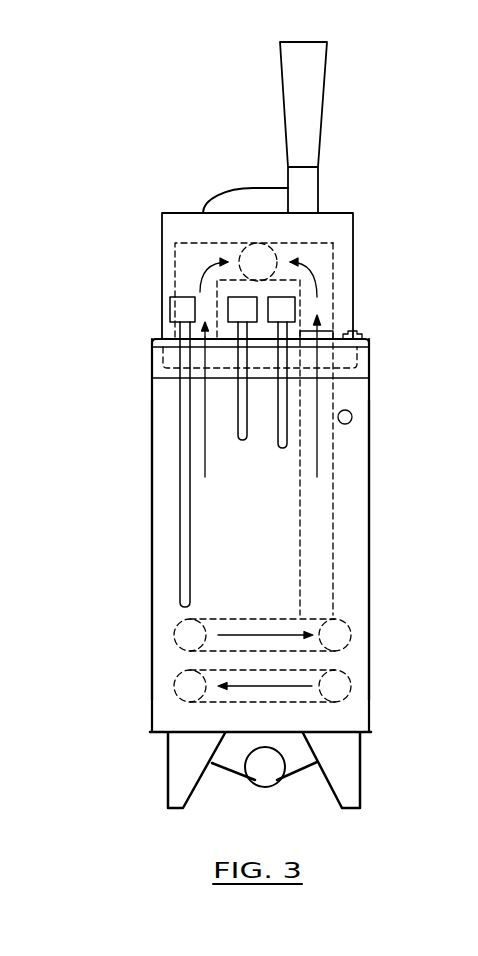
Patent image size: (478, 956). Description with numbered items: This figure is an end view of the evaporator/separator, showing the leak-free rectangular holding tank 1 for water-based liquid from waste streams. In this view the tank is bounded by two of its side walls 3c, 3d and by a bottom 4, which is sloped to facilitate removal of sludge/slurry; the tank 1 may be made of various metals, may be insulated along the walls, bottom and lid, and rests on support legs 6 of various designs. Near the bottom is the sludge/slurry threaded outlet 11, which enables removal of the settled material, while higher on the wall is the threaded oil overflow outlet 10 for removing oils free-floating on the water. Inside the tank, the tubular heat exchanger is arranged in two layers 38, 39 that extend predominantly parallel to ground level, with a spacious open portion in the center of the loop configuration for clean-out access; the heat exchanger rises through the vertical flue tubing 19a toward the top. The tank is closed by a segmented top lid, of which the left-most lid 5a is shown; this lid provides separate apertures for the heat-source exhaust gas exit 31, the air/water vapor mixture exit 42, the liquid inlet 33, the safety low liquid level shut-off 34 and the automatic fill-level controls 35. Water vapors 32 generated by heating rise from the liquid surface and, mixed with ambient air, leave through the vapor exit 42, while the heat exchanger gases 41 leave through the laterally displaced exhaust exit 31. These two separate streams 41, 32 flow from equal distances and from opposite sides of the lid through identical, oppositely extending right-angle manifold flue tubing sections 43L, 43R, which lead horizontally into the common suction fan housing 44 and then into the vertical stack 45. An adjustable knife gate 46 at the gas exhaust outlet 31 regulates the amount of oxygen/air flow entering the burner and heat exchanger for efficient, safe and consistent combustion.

The holding tank 1 is at (143, 448).
The wall 3c is at (133, 550).
The wall 3d is at (394, 550).
The bottom 4 is at (300, 743).
The left-most lid 5a is at (151, 338).
The support legs 6 is at (178, 812).
The threaded oil overflow outlet 10 is at (355, 415).
The sludge/slurry outlet 11 is at (257, 787).
The flue tubing 19a is at (340, 552).
The heat-source exhaust gas exit 31 is at (325, 343).
The liquid inlet 33 is at (360, 333).
The water vapors 32 is at (202, 464).
The safety low liquid level shut-off 34 is at (184, 310).
The automatic fill-level controls 35 is at (283, 297).
The heat exchanger layer 38 is at (350, 630).
The heat exchanger layer 39 is at (350, 677).
The gases 41 is at (320, 412).
The air/water vapor mixture exit 42 is at (203, 345).
The manifold flue tubing section 43L is at (195, 257).
The manifold flue tubing section 43R is at (323, 252).
The common suction fan housing 44 is at (255, 187).
The vertical stack 45 is at (282, 83).
The adjustable knife gate 46 is at (331, 331).